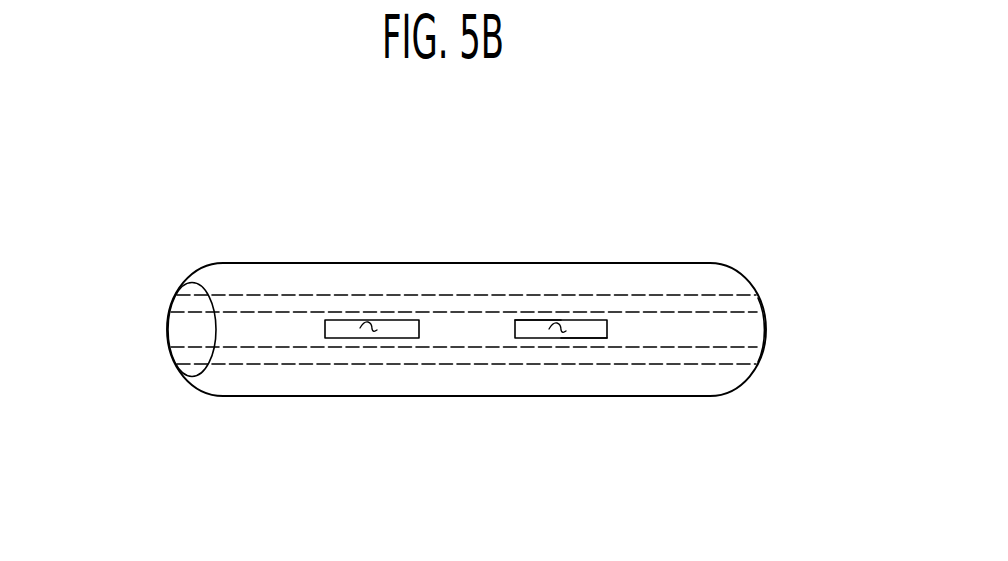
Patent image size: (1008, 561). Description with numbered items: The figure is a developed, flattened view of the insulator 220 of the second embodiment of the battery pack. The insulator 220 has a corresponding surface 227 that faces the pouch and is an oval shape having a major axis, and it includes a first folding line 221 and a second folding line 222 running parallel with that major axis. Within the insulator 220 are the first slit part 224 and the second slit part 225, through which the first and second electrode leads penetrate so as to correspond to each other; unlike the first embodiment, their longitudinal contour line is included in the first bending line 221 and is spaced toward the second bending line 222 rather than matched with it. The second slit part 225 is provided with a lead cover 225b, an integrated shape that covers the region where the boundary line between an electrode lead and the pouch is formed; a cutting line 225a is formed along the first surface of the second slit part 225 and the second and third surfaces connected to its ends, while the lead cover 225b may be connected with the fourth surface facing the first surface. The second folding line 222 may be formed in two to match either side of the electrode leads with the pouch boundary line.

The insulator 220 is at (169, 193).
The first folding line 221 is at (737, 313).
The second folding line 222 is at (190, 282).
The first slit part 224 is at (368, 322).
The second slit part 225 is at (557, 323).
The cutting line 225a is at (543, 320).
The lead cover 225b is at (588, 331).
The corresponding surface 227 is at (685, 277).